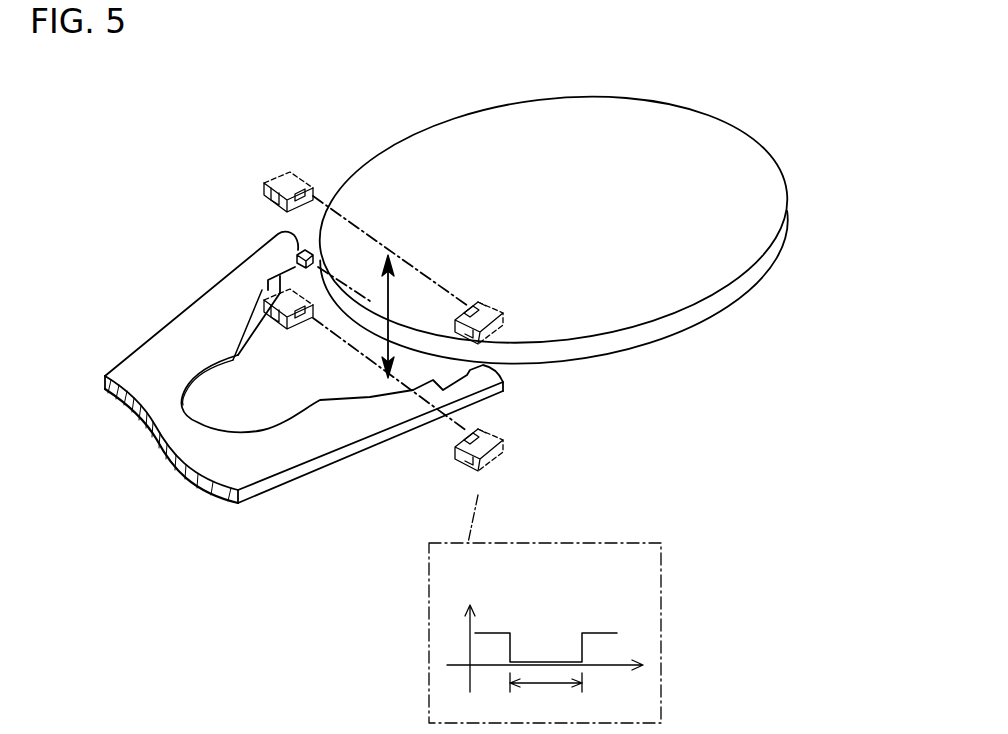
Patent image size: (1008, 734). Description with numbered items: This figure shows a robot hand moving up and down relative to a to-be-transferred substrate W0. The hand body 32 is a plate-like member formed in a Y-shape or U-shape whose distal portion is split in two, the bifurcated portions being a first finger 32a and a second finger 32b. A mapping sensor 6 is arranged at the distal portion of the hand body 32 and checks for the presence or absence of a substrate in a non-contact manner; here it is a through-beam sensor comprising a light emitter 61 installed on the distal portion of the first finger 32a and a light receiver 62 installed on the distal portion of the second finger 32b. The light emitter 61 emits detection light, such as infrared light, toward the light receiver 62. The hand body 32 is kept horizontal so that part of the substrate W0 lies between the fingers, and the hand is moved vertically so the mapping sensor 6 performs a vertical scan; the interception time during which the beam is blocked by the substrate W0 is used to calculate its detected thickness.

The to-be-transferred substrate W0 is at (638, 143).
The hand body 32 is at (122, 329).
The first finger 32a is at (223, 313).
The second finger 32b is at (362, 437).
The light emitter 61 is at (303, 247).
The light receiver 62 is at (485, 348).
The mapping sensor 6 is at (617, 425).